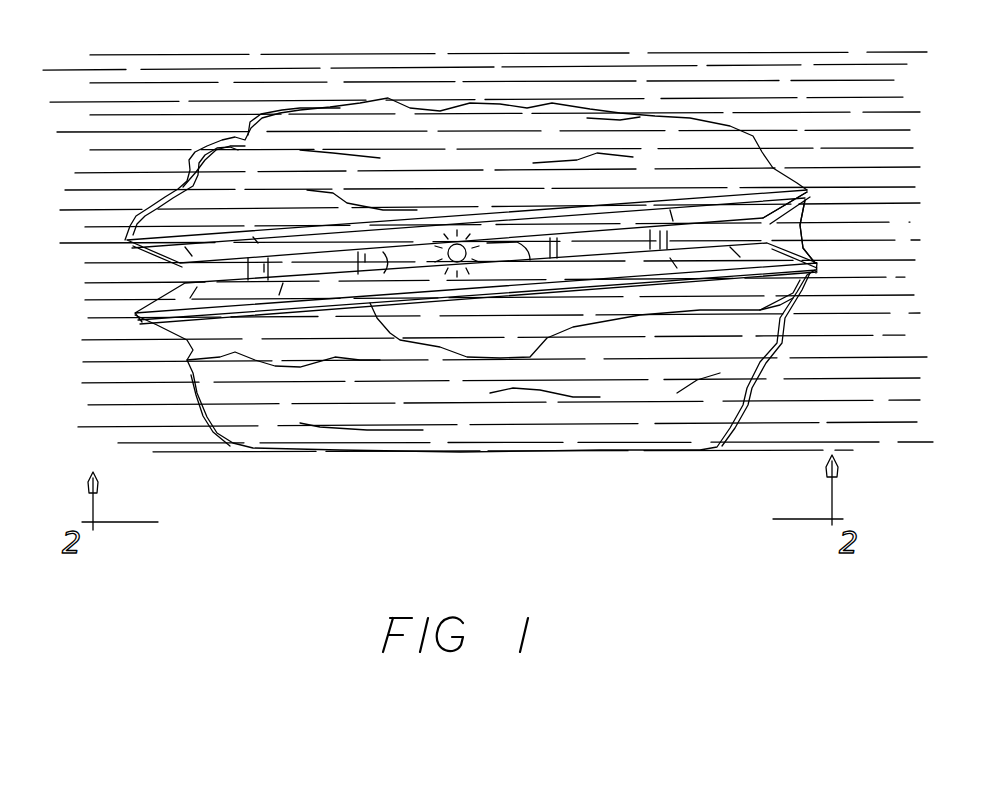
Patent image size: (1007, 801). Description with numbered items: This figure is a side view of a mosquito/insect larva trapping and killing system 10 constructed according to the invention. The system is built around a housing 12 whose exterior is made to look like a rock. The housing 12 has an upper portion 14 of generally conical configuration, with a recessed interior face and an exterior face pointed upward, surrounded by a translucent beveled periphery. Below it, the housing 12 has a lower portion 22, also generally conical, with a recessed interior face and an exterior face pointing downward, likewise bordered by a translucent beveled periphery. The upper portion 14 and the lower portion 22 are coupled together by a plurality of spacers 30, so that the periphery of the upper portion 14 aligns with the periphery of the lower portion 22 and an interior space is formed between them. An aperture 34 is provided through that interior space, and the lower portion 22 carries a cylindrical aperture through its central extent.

The mosquito/insect larva trapping and killing system 10 is at (765, 128).
The housing 12 is at (808, 290).
The upper portion 14 is at (222, 158).
The lower portion 22 is at (292, 403).
The spacers 30 is at (268, 275).
The aperture 34 is at (183, 273).